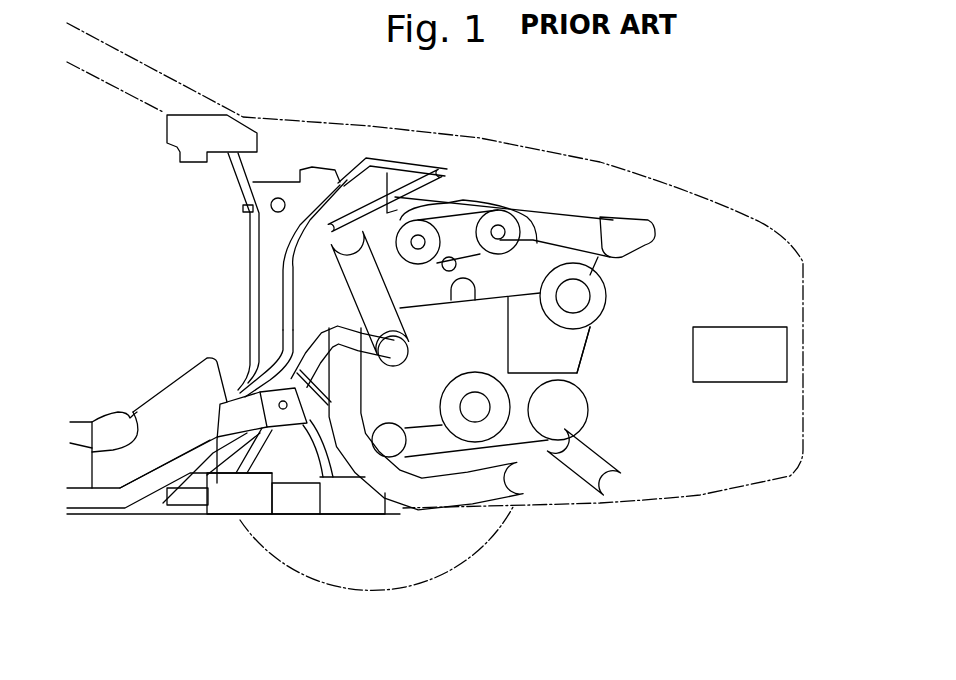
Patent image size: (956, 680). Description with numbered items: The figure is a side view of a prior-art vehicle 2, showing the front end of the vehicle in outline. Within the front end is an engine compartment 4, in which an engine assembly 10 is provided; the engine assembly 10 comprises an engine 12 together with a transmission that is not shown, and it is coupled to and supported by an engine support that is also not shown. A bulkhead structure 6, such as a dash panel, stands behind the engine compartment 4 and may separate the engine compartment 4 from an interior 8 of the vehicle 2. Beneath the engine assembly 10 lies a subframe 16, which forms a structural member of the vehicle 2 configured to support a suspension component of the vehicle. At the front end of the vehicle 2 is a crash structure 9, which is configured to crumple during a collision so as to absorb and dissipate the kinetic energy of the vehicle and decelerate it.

The vehicle 2 is at (573, 135).
The engine compartment 4 is at (640, 283).
The bulkhead structure 6 is at (212, 487).
The interior 8 is at (120, 278).
The crash structure 9 is at (733, 360).
The engine assembly 10 is at (593, 202).
The engine 12 is at (463, 210).
The subframe 16 is at (293, 505).